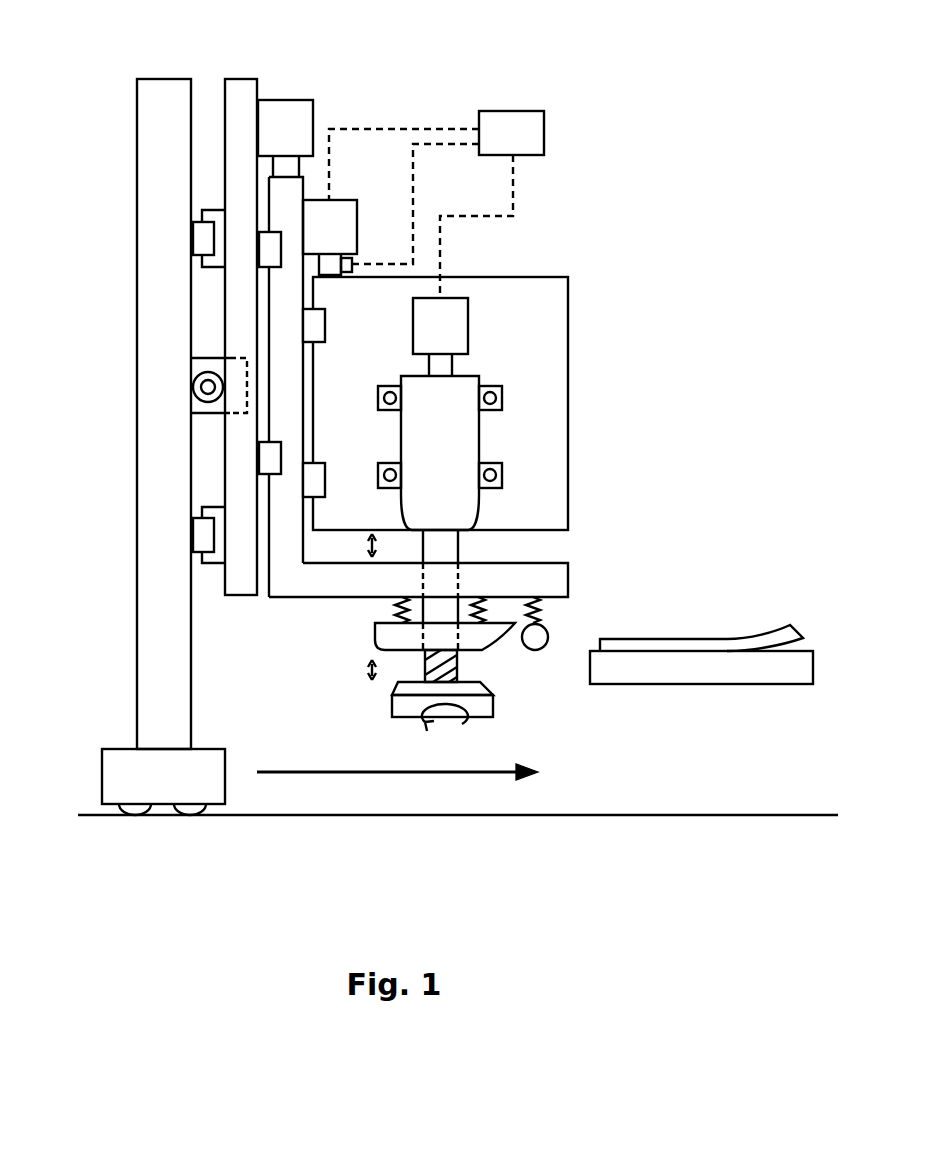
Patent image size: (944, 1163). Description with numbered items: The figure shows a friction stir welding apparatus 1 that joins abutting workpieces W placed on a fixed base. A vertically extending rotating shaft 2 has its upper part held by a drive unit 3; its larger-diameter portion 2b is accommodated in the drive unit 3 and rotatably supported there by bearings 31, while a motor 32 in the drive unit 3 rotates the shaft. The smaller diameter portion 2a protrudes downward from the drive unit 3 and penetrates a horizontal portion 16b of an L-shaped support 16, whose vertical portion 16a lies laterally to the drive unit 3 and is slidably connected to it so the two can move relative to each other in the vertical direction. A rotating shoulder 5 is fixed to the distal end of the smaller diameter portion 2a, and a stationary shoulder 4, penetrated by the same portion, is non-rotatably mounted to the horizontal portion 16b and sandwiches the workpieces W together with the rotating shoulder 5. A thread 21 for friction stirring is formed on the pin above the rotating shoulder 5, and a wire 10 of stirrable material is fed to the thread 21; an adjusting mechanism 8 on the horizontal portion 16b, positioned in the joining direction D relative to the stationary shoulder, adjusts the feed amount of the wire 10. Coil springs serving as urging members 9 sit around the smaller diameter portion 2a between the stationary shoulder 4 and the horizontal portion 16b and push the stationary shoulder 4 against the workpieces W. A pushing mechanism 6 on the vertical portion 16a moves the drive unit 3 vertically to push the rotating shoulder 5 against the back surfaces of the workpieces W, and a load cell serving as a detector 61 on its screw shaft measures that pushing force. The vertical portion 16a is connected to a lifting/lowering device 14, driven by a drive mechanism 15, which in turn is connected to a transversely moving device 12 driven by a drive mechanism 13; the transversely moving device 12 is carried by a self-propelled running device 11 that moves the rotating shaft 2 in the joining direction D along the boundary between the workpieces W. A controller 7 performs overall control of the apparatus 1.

The friction stir welding apparatus 1 is at (752, 168).
The rotating shaft 2 is at (540, 513).
The smaller diameter portion 2a is at (445, 545).
The larger-diameter portion 2b is at (465, 520).
The drive unit 3 is at (540, 277).
The bearings 31 is at (502, 392).
The motor 32 is at (468, 333).
The stationary shoulder 4 is at (477, 637).
The rotating shoulder 5 is at (493, 705).
The pushing mechanism 6 is at (316, 200).
The detector 61 is at (352, 265).
The controller 7 is at (497, 120).
The adjusting mechanism 8 is at (555, 622).
The urging members 9 is at (394, 606).
The wire 10 is at (772, 642).
The running device 11 is at (167, 793).
The transversely moving device 12 is at (165, 478).
The drive mechanism 13 is at (200, 407).
The lifting/lowering device 14 is at (240, 318).
The drive mechanism 15 is at (291, 112).
The support 16 is at (388, 456).
The vertical portion 16a is at (280, 545).
The horizontal portion 16b is at (337, 582).
The thread 21 is at (423, 665).
The joining direction D is at (345, 773).
The workpieces W is at (695, 663).